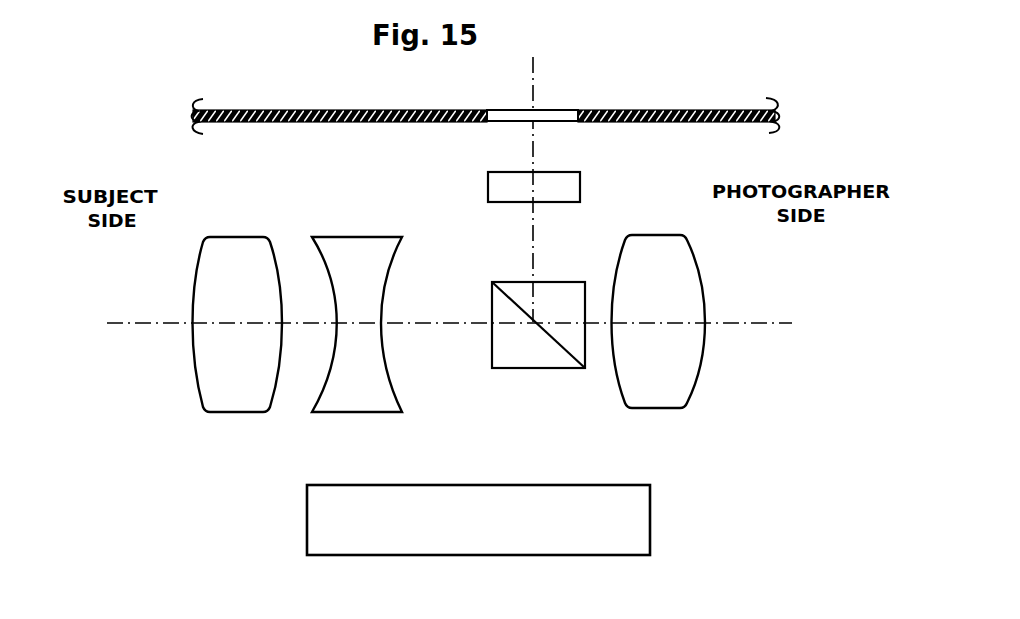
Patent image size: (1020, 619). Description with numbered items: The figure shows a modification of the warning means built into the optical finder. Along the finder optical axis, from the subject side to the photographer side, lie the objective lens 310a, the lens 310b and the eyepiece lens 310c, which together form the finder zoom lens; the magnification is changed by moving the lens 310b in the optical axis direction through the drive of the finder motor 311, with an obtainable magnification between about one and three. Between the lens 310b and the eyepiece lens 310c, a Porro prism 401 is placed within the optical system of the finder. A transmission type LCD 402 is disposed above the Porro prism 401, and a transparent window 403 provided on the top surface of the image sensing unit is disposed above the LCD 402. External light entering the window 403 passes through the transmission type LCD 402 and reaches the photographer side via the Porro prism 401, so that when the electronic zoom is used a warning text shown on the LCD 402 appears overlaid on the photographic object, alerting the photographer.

The transparent window 403 is at (562, 111).
The transmission type LCD 402 is at (582, 180).
The Porro prism 401 is at (552, 288).
The objective lens 310a is at (235, 233).
The lens 310b is at (355, 233).
The eyepiece lens 310c is at (642, 233).
The finder motor 311 is at (650, 520).